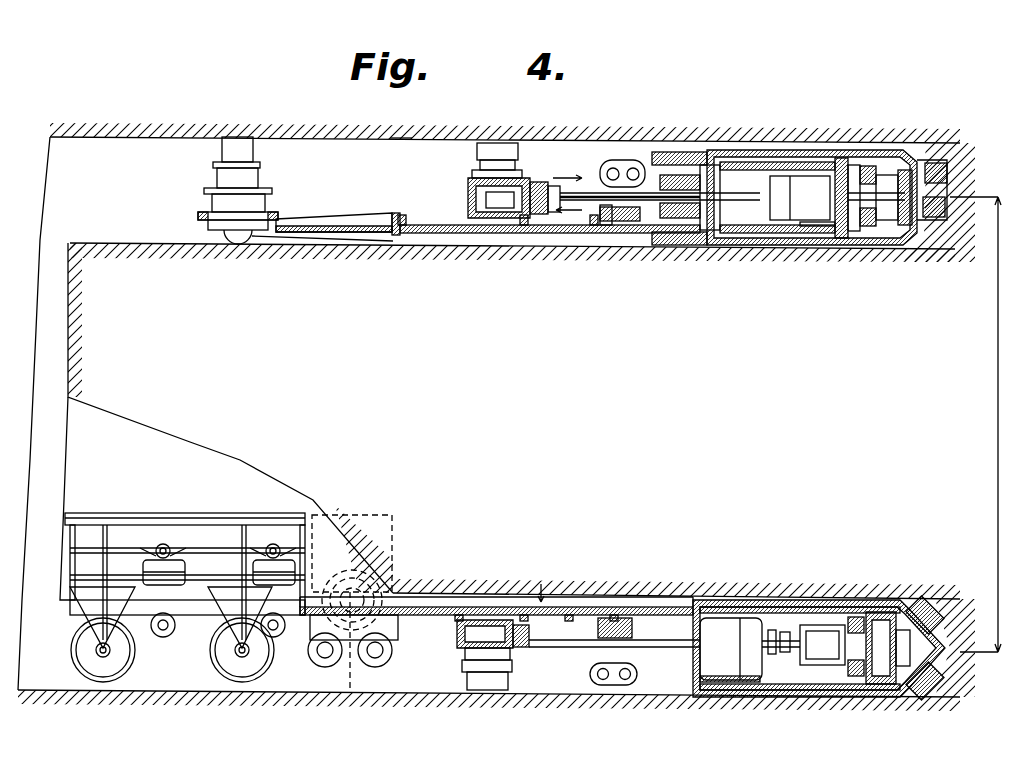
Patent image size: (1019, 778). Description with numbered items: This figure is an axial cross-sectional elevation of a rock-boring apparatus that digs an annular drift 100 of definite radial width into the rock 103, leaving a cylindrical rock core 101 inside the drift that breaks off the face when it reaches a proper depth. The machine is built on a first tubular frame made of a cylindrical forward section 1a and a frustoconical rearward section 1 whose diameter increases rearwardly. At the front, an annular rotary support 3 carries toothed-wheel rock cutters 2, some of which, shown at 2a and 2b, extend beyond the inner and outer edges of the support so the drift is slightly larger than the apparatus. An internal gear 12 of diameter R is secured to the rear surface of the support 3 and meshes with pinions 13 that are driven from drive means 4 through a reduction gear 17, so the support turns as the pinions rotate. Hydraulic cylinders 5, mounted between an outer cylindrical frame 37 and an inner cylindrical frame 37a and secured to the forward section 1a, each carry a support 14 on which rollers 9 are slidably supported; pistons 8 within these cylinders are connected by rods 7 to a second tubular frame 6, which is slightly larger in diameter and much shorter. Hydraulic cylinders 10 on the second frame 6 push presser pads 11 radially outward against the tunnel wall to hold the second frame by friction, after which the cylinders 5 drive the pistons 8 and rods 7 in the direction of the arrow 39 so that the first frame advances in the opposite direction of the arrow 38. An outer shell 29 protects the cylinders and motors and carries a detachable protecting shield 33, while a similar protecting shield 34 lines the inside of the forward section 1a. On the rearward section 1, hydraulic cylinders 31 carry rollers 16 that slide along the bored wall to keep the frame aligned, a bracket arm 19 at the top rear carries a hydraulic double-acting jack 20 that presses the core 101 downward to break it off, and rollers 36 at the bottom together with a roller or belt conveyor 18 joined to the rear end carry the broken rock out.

The annular drift 100 is at (135, 153).
The cylindrical rock core 101 is at (100, 258).
The rock 103 is at (402, 140).
The rearward frame section 1 is at (668, 235).
The forward frame section 1a is at (787, 240).
The rock cutter 2 is at (947, 200).
The inner projecting rock cutter 2a is at (935, 603).
The outer projecting rock cutter 2b is at (948, 683).
The annular rotary support 3 is at (905, 238).
The drive means 4 is at (722, 665).
The hydraulic cylinder 5 is at (765, 162).
The second tubular frame 6 is at (468, 189).
The rod 7 is at (722, 212).
The piston 8 is at (793, 180).
The roller 9 is at (875, 170).
The hydraulic cylinder 10 is at (495, 206).
The presser pad 11 is at (478, 152).
The internal gear 12 is at (920, 160).
The pinion 13 is at (885, 612).
The support 14 is at (860, 203).
The roller 16 is at (645, 162).
The reduction gear 17 is at (822, 668).
The conveyor 18 is at (230, 530).
The bracket arm 19 is at (333, 222).
The hydraulic double-acting jack 20 is at (215, 203).
The outer shell 29 is at (727, 152).
The hydraulic cylinder 31 is at (617, 215).
The protecting shield 33 is at (855, 165).
The protecting shield 34 is at (760, 237).
The roller 36 is at (372, 662).
The outer cylindrical frame 37 is at (840, 160).
The inner cylindrical frame 37a is at (815, 240).
The arrow 38 is at (567, 167).
The arrow 39 is at (572, 214).
The diameter of internal gear R is at (975, 424).